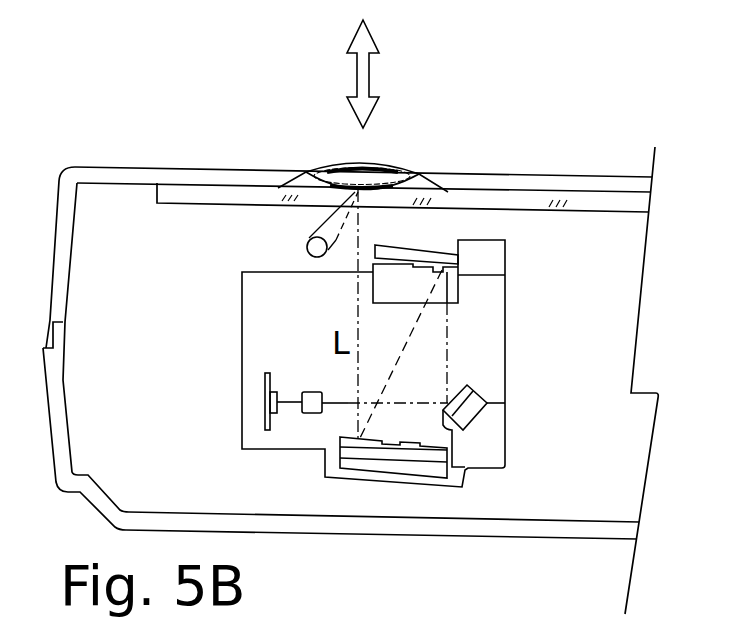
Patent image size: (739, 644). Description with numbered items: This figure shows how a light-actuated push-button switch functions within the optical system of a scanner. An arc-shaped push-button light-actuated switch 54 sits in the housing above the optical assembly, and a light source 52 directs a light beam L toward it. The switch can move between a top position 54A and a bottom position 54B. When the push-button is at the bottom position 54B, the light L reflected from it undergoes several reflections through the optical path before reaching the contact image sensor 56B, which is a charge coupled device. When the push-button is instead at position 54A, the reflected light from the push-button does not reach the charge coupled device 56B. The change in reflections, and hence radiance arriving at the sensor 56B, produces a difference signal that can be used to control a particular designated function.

The light source 52 is at (305, 247).
The arc-shaped push-button light-actuated switch 54 is at (313, 152).
The top position of the push-button switch 54A is at (380, 165).
The bottom position of the push-button switch 54B is at (393, 188).
The contact image sensor (charge coupled device) 56B is at (311, 408).